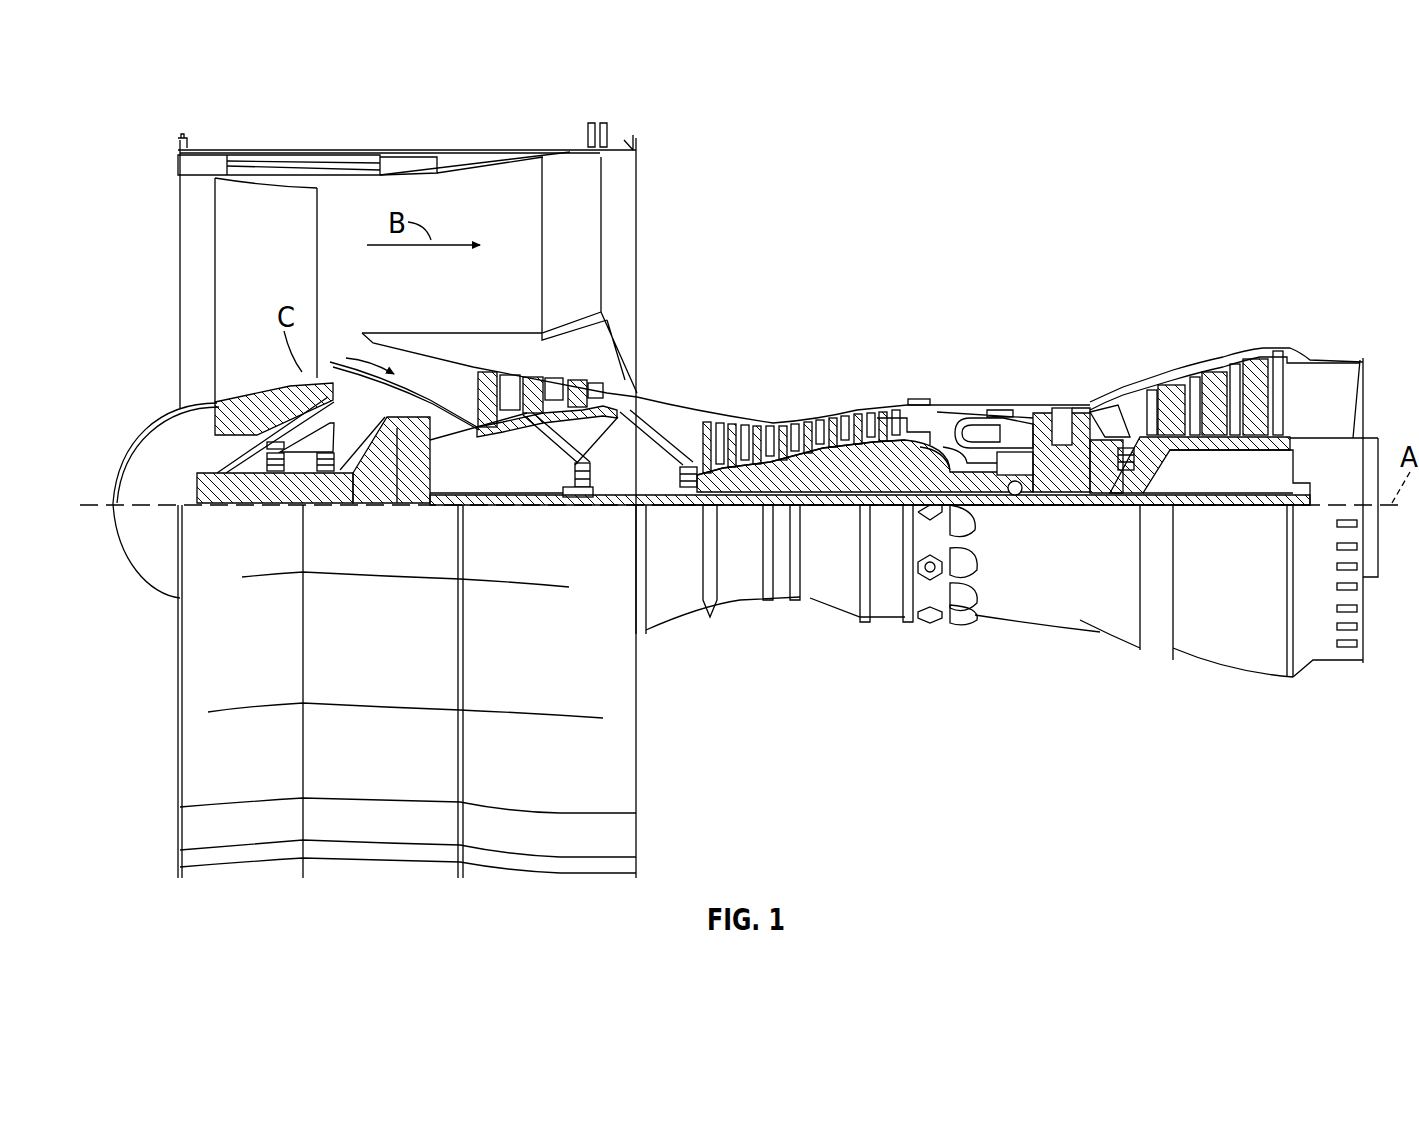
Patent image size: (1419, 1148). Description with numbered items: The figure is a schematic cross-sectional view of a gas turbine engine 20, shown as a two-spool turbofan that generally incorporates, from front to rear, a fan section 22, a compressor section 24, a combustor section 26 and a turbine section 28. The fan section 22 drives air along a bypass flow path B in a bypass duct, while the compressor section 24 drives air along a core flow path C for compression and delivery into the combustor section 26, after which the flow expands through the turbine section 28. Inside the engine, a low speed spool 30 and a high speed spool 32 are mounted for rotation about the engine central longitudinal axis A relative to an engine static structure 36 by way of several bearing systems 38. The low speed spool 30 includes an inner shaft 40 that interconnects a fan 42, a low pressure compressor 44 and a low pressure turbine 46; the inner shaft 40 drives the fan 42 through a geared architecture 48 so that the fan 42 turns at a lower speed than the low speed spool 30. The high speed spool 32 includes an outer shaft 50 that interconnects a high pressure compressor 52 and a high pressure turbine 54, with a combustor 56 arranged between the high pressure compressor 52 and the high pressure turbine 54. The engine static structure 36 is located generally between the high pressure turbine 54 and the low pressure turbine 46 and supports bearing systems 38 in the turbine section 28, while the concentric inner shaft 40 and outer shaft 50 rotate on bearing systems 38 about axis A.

The gas turbine engine 20 is at (1258, 117).
The fan section 22 is at (598, 128).
The compressor section 24 is at (821, 333).
The combustor section 26 is at (983, 338).
The turbine section 28 is at (1122, 312).
The low speed spool 30 is at (849, 511).
The high speed spool 32 is at (905, 460).
The engine static structure 36 is at (893, 628).
The bearing systems 38 is at (277, 470).
The inner shaft 40 is at (655, 508).
The fan 42 is at (278, 276).
The low pressure compressor 44 is at (547, 380).
The low pressure turbine 46 is at (1222, 376).
The geared architecture 48 is at (408, 478).
The outer shaft 50 is at (1016, 495).
The high pressure compressor 52 is at (810, 470).
The high pressure turbine 54 is at (1060, 407).
The combustor 56 is at (983, 433).